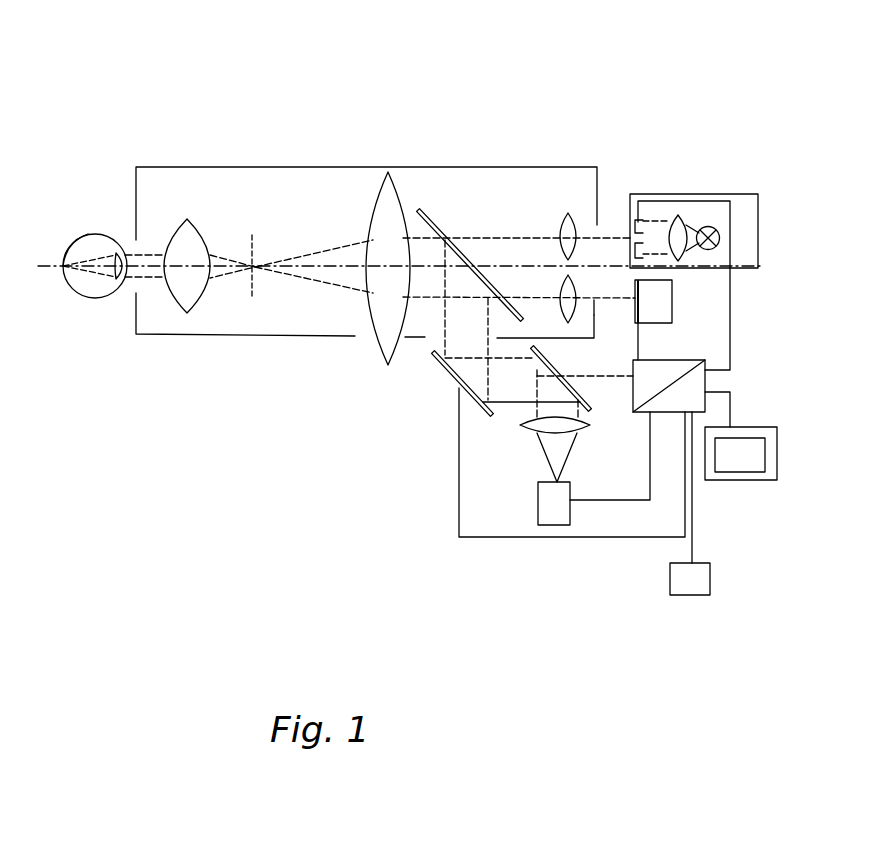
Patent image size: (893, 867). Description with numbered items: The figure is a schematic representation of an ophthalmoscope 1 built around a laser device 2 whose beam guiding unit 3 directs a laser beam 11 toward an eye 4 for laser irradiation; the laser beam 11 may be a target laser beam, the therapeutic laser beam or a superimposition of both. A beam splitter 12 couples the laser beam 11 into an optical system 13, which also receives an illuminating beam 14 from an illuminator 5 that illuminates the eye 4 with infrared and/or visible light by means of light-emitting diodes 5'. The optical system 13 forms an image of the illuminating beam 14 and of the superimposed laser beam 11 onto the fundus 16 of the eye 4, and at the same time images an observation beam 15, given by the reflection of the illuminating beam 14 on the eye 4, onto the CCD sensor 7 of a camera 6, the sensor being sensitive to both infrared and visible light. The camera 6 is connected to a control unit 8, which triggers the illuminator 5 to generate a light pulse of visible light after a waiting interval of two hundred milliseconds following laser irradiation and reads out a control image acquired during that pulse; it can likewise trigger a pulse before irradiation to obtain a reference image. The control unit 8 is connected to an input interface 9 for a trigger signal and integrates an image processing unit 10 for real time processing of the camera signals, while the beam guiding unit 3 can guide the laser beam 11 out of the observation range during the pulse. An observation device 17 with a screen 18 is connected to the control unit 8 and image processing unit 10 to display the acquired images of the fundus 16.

The ophthalmoscope 1 is at (404, 70).
The laser device 2 is at (554, 503).
The beam guiding unit 3 is at (530, 372).
The eye 4 is at (87, 298).
The illuminator 5 is at (694, 230).
The light-emitting diodes 5' is at (717, 188).
The camera 6 is at (653, 320).
The CCD sensor 7 is at (626, 318).
The control unit 8 is at (669, 386).
The input interface 9 is at (690, 579).
The image processing unit 10 is at (700, 407).
The laser beam 11 is at (543, 463).
The beam splitter 12 is at (442, 226).
The optical system 13 is at (223, 167).
The illuminating beam 14 is at (535, 238).
The observation beam 15 is at (606, 308).
The fundus 16 is at (87, 237).
The observation device 17 is at (768, 483).
The screen 18 is at (740, 455).